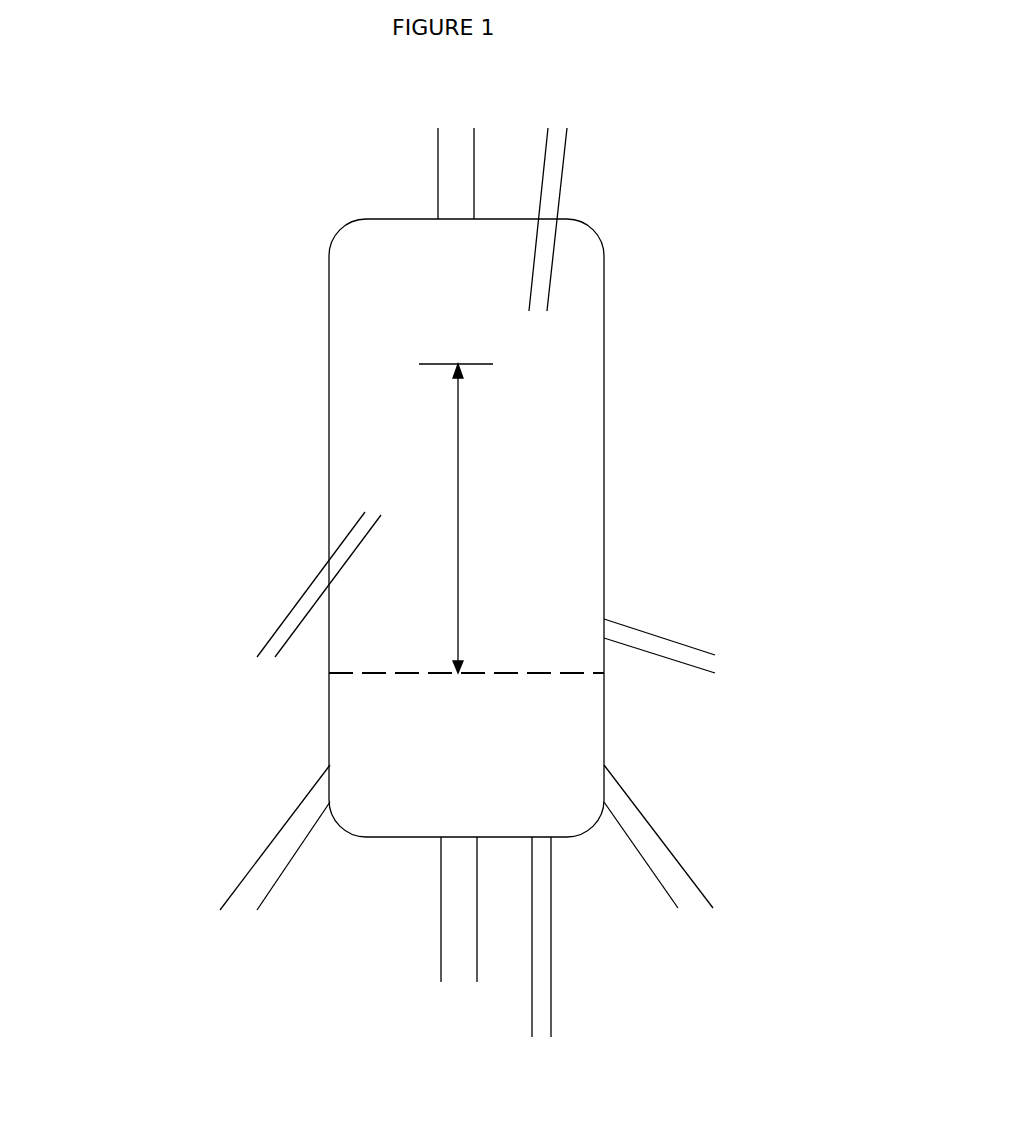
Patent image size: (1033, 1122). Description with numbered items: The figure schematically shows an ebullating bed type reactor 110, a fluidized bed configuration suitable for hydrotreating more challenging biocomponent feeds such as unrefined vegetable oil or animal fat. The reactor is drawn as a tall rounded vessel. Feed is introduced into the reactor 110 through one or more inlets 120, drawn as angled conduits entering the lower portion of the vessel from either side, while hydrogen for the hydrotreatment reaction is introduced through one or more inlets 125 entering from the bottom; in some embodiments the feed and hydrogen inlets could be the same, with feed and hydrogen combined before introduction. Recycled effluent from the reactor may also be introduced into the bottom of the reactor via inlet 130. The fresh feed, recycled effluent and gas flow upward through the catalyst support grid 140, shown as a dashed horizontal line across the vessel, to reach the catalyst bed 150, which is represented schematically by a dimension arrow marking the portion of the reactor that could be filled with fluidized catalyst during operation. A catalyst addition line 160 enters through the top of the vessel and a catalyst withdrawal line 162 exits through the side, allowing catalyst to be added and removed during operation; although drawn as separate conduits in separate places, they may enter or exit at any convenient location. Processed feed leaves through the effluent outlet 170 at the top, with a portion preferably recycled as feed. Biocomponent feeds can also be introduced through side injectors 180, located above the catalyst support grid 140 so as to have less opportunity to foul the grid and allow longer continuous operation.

The ebullating bed type reactor 110 is at (310, 366).
The inlets 120 is at (238, 857).
The inlets 125 is at (568, 943).
The inlet 130 is at (423, 908).
The catalyst support grid 140 is at (367, 692).
The catalyst bed 150 is at (475, 510).
The catalyst addition line 160 is at (584, 183).
The catalyst withdrawal line 162 is at (257, 602).
The effluent outlet 170 is at (420, 166).
The side injectors 180 is at (677, 600).